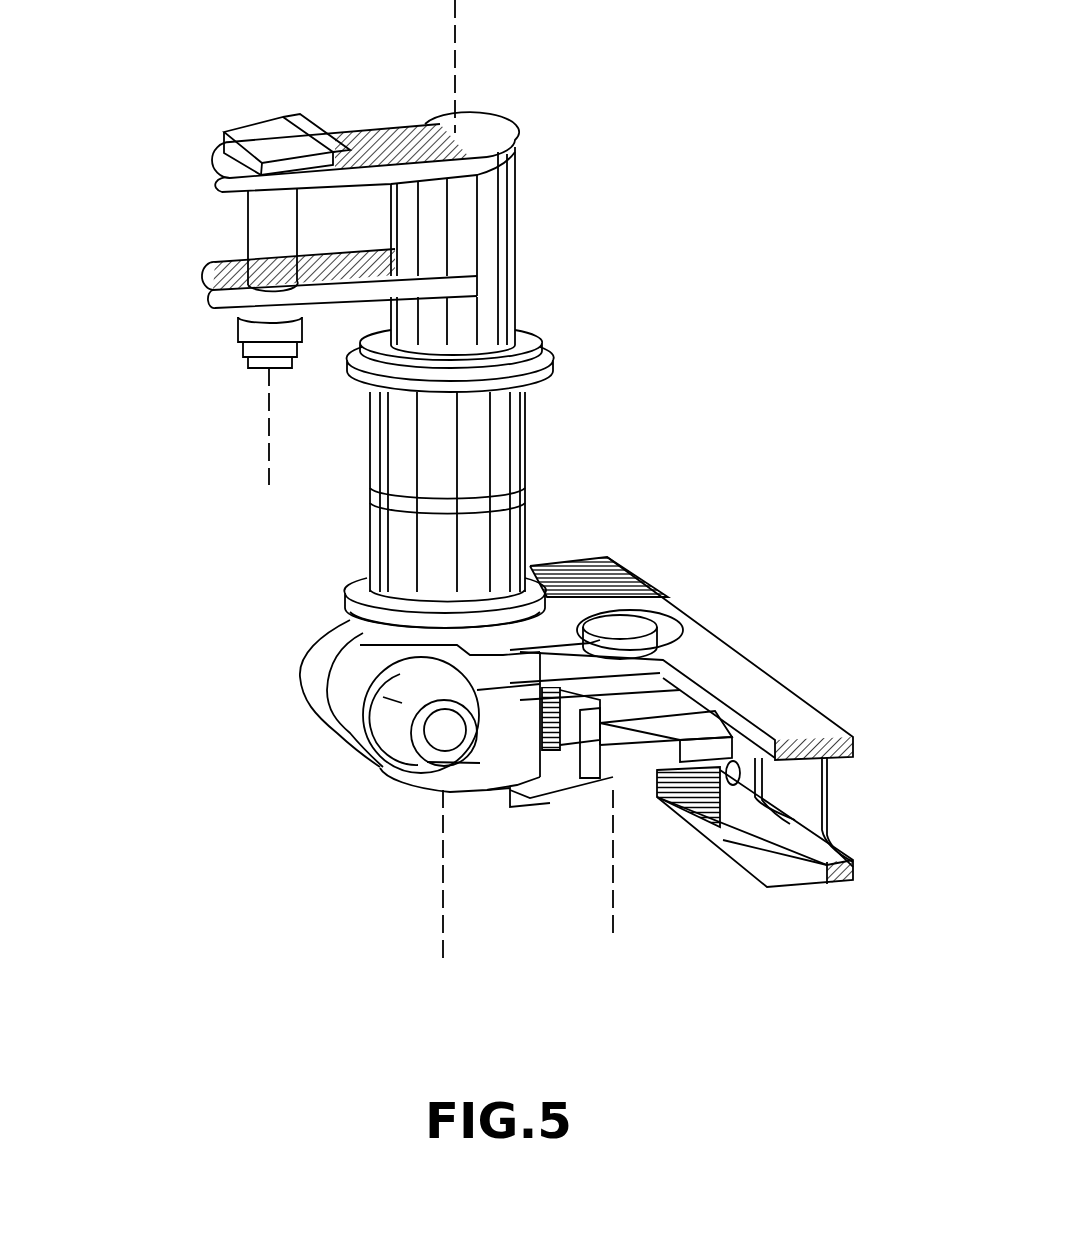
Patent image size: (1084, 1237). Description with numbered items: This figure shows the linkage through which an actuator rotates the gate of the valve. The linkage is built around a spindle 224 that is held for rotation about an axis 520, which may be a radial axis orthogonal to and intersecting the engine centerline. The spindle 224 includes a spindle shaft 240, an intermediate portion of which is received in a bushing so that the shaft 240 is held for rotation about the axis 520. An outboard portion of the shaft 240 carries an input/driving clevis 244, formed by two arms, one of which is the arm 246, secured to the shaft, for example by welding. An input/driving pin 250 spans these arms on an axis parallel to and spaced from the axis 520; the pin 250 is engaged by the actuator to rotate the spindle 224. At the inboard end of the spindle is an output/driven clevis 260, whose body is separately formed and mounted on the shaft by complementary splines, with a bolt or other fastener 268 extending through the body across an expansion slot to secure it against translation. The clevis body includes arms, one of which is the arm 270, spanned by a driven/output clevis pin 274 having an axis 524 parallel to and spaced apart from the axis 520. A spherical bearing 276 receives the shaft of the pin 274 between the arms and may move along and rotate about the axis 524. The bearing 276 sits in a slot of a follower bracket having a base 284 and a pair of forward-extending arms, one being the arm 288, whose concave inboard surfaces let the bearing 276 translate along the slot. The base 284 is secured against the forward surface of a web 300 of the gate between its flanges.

The axis 520 is at (455, 30).
The axis 524 is at (614, 932).
The spindle shaft 240 is at (492, 228).
The arm 246 is at (367, 128).
The input/driving pin 250 is at (253, 232).
The input/driving clevis 244 is at (348, 256).
The spindle 224 is at (683, 354).
The arm 270 is at (549, 795).
The bolt or other fastener 268 is at (400, 703).
The driven/output clevis pin 274 is at (620, 627).
The spherical bearing 276 is at (655, 672).
The web 300 is at (780, 793).
The arm 288 is at (636, 767).
The base 284 is at (718, 768).
The output/driven clevis 260 is at (522, 900).